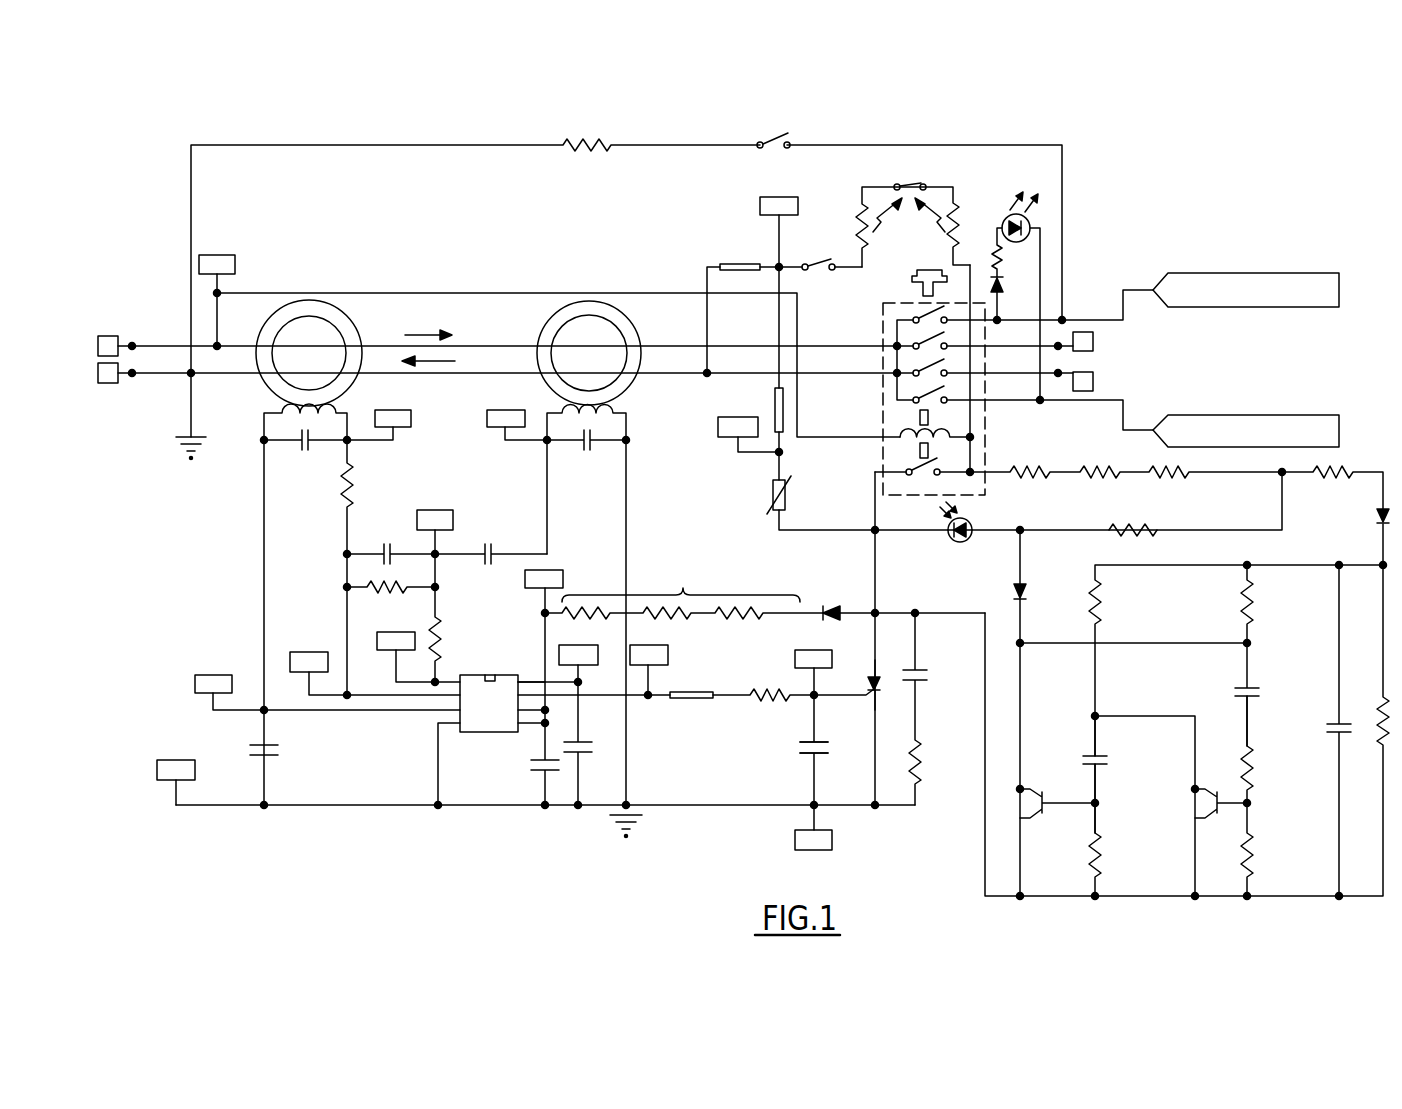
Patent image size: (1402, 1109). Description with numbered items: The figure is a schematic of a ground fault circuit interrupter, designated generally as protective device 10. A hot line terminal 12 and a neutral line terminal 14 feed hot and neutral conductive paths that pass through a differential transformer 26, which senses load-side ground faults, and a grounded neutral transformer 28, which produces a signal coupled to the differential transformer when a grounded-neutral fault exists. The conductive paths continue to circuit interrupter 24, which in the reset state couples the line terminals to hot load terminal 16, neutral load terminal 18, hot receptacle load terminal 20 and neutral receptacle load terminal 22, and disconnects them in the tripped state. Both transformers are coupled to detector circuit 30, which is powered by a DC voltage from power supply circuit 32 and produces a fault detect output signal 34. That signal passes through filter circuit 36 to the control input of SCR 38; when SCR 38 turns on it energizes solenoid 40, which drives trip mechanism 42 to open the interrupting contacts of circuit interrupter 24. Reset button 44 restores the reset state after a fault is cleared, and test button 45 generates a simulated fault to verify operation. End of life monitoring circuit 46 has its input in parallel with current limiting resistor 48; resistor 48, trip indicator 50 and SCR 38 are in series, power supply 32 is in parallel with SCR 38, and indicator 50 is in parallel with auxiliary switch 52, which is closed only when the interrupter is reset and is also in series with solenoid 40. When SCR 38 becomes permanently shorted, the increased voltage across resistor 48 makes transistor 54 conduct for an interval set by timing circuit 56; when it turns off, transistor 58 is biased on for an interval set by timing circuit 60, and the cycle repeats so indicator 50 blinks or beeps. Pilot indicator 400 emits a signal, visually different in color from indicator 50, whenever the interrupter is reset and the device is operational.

The protective device 10 is at (675, 100).
The hot line terminal 12 is at (93, 340).
The neutral line terminal 14 is at (93, 377).
The hot load terminal 16 is at (1084, 330).
The neutral load terminal 18 is at (1083, 393).
The hot receptacle load terminal 20 is at (1293, 273).
The neutral receptacle load terminal 22 is at (1293, 415).
The circuit interrupter 24 is at (882, 312).
The differential transformer 26 is at (358, 335).
The grounded neutral transformer 28 is at (636, 327).
The detector circuit 30 is at (474, 675).
The power supply circuit 32 is at (683, 572).
The fault detect output signal 34 is at (532, 660).
The filter circuit 36 is at (784, 737).
The SCR 38 is at (877, 670).
The solenoid 40 is at (951, 433).
The trip mechanism 42 is at (919, 417).
The reset button 44 is at (916, 276).
The test button 45 is at (801, 130).
The end of life monitoring circuit 46 is at (1233, 548).
The current limiting resistor 48 is at (1142, 527).
The trip indicator 50 is at (959, 545).
The auxiliary switch 52 is at (920, 497).
The transistor 54 is at (1018, 818).
The timing circuit 56 is at (1115, 684).
The transistor 58 is at (1193, 816).
The timing circuit 60 is at (1263, 717).
The pilot indicator 400 is at (1005, 212).